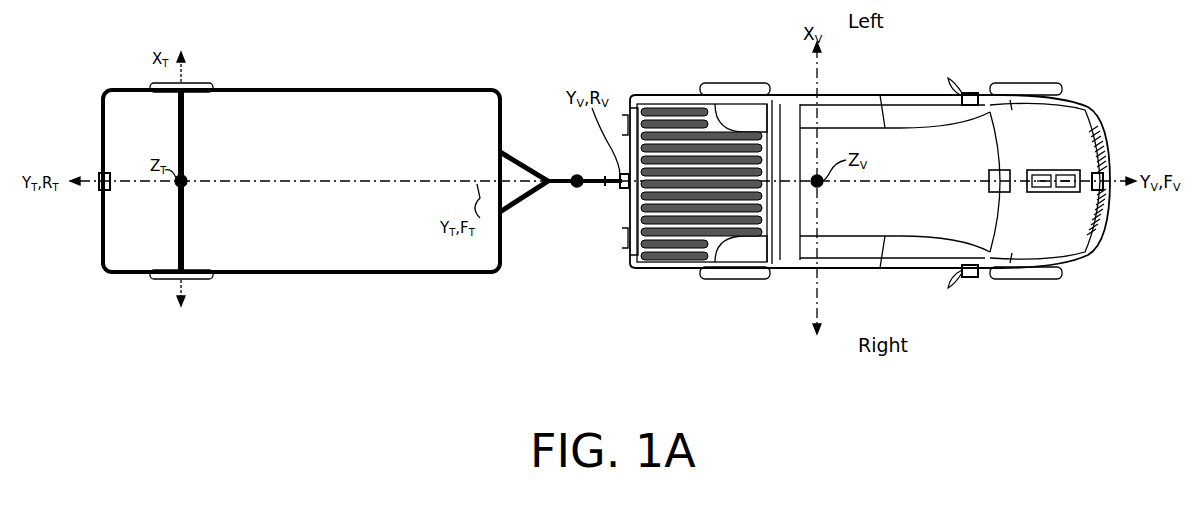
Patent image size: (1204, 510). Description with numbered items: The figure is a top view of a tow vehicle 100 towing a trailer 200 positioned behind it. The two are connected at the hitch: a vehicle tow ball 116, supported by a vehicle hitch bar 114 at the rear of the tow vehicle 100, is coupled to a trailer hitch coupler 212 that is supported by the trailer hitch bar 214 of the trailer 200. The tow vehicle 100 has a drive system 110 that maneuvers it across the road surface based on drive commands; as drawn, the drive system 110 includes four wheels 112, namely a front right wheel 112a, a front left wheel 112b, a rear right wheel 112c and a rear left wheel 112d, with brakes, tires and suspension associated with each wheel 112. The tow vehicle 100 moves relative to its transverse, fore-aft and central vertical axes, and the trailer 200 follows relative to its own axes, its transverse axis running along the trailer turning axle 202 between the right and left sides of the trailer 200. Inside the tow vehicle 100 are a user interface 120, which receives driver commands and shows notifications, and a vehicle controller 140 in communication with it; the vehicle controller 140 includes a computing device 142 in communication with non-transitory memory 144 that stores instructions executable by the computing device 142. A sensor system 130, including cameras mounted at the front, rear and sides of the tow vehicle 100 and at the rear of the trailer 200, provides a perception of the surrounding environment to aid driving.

The tow vehicle 100 is at (1058, 70).
The drive system 110 is at (200, 84).
The wheel 112 is at (882, 180).
The front right wheel 112a is at (1030, 83).
The front left wheel 112b is at (1030, 280).
The rear right wheel 112c is at (740, 83).
The rear left wheel 112d is at (740, 280).
The vehicle hitch bar 114 is at (601, 190).
The vehicle tow ball 116 is at (577, 190).
The user interface 120 is at (988, 180).
The sensor system 130 is at (100, 191).
The vehicle controller 140 is at (1049, 180).
The computing device 142 is at (1066, 192).
The non-transitory memory 144 is at (1040, 192).
The trailer 200 is at (318, 58).
The trailer turning axle 202 is at (185, 141).
The trailer hitch coupler 212 is at (566, 176).
The trailer hitch bar 214 is at (528, 170).